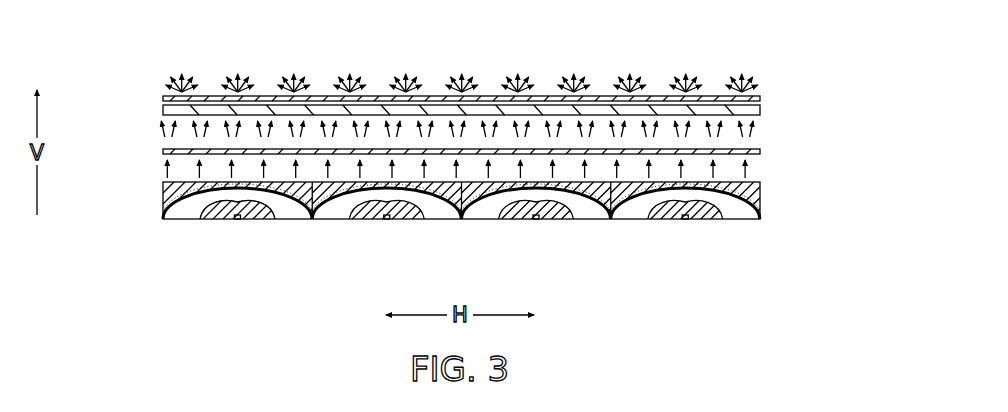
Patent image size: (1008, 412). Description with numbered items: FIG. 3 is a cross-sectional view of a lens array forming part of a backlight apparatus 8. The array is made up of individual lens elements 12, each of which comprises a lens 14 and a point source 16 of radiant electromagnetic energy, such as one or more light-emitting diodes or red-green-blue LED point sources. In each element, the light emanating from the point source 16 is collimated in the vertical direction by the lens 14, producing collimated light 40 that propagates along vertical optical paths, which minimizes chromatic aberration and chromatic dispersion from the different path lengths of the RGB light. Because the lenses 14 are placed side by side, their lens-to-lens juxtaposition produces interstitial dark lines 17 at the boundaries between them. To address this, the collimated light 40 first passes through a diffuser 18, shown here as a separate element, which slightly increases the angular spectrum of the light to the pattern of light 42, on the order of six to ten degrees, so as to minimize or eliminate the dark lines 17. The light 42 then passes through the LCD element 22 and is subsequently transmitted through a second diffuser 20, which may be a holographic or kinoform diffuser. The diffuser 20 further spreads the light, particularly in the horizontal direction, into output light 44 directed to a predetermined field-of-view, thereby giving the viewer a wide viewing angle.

The backlight apparatus 8 is at (772, 46).
The individual lens element 12 is at (464, 56).
The lens 14 is at (163, 200).
The point source 16 is at (237, 220).
The interstitial dark lines 17 is at (312, 219).
The diffuser 18 is at (760, 151).
The diffuser 20 is at (760, 100).
The LCD element 22 is at (760, 111).
The collimated light 40 is at (163, 171).
The light 42 is at (163, 128).
The output light 44 is at (165, 83).